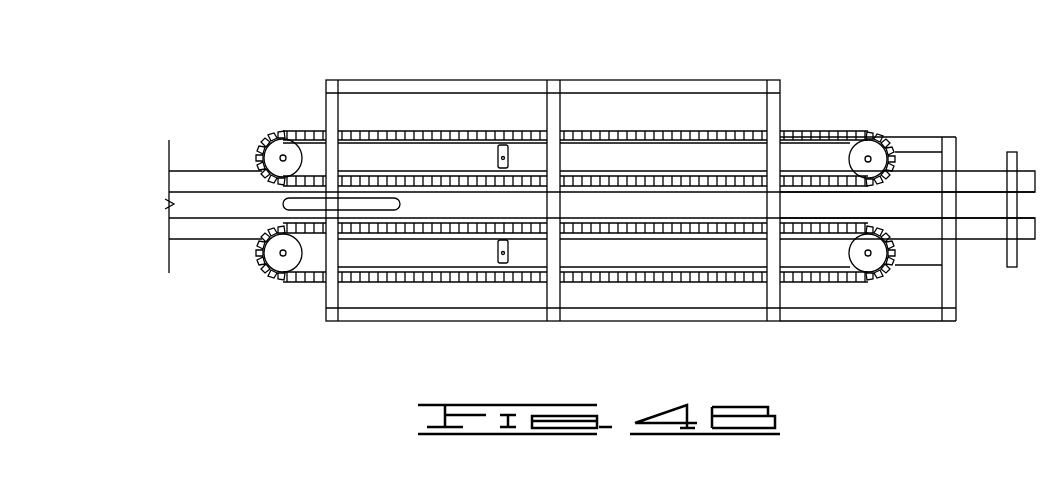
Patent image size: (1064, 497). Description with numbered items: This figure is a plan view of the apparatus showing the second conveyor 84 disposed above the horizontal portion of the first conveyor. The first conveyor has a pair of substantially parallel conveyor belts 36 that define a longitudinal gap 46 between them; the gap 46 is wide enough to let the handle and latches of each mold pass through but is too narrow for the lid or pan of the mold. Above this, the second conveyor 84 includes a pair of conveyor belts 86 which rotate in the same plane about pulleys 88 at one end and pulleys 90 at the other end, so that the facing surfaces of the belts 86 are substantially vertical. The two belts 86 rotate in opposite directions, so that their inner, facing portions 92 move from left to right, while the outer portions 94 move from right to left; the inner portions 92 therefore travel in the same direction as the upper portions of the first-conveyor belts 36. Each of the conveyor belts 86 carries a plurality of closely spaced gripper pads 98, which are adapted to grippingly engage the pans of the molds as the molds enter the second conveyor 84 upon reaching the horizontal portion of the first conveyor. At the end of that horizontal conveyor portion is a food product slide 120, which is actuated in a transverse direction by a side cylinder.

The conveyor belts 36 is at (218, 180).
The longitudinal gap 46 is at (190, 198).
The second conveyor 84 is at (688, 275).
The conveyor belts 86 is at (609, 199).
The pulleys 88 is at (272, 162).
The pulleys 90 is at (868, 152).
The inner facing portions 92 is at (440, 172).
The outer portions 94 is at (317, 130).
The gripper pads 98 is at (272, 133).
The food product slide 120 is at (375, 198).